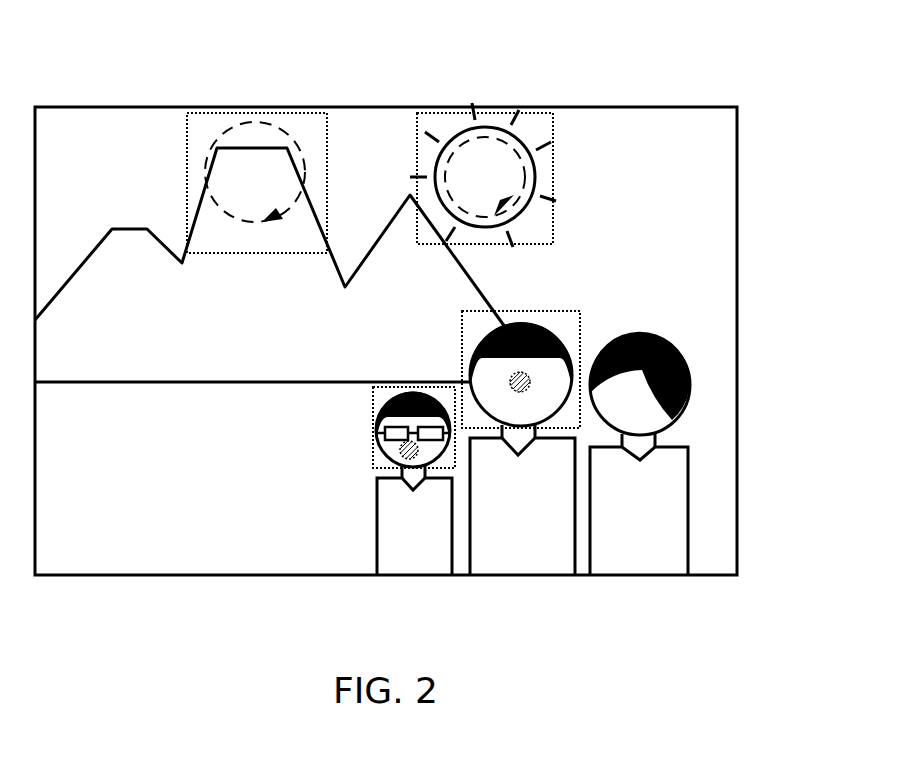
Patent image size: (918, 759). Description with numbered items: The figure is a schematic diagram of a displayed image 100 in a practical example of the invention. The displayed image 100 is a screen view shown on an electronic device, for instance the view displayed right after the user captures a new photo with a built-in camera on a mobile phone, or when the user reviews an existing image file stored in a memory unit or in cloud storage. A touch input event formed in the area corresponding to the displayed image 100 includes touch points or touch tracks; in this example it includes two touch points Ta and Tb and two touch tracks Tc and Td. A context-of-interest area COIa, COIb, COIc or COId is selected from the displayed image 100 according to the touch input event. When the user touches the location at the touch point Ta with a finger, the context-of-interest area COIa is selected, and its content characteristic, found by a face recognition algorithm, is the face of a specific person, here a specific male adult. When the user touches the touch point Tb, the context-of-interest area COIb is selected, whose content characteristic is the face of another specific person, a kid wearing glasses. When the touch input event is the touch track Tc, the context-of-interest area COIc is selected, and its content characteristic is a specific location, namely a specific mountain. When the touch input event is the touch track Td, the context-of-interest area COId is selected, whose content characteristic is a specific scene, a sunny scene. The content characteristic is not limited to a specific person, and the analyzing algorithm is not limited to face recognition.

The displayed image 100 is at (672, 107).
The context-of-interest area COIa is at (545, 311).
The context-of-interest area COIb is at (373, 426).
The context-of-interest area COIc is at (187, 137).
The context-of-interest area COId is at (553, 162).
The touch point Ta is at (528, 392).
The touch point Tb is at (408, 460).
The touch track Tc is at (287, 137).
The touch track Td is at (490, 134).